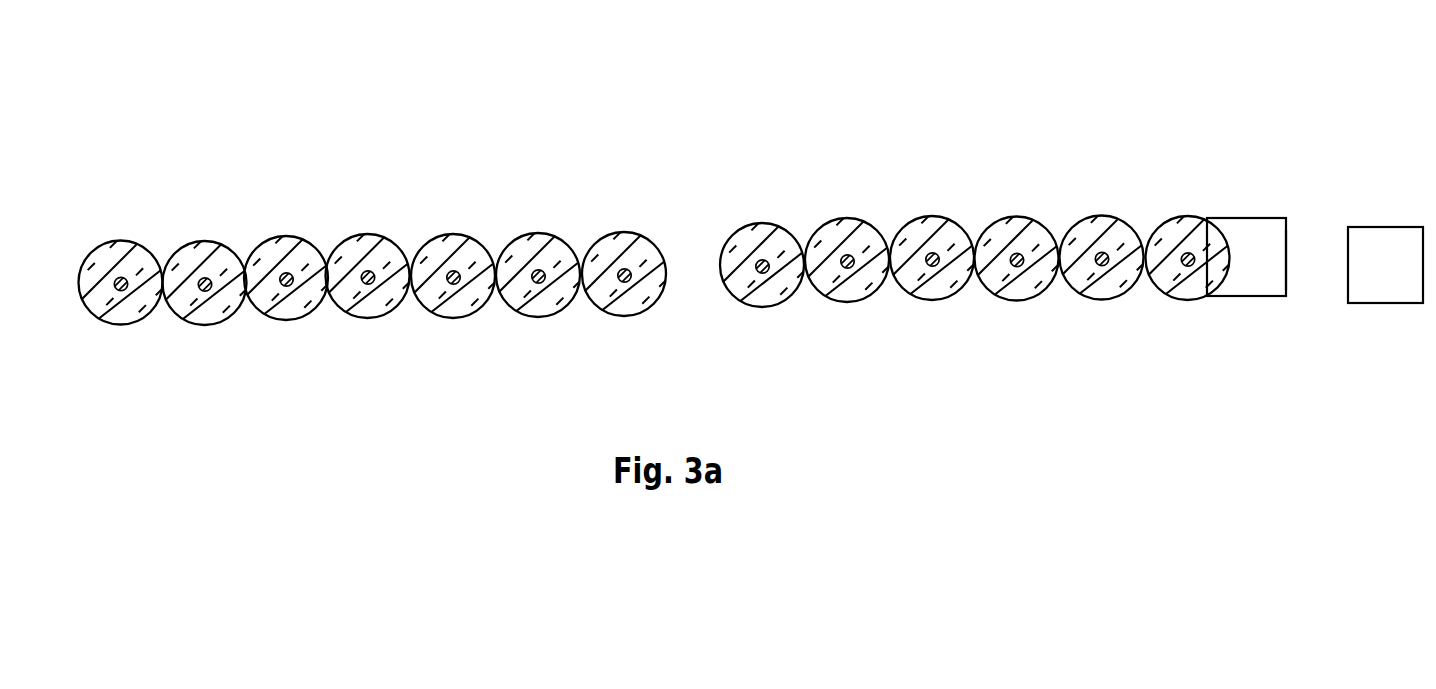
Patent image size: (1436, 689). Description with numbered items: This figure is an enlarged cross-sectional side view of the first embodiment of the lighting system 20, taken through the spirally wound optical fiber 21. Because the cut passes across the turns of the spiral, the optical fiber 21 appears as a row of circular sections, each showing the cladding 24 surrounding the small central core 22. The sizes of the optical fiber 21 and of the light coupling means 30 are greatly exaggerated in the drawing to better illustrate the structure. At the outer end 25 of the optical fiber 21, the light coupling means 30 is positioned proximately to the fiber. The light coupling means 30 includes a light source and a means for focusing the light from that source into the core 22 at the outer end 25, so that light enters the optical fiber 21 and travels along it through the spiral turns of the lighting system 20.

The lighting system 20 is at (842, 109).
The optical fiber 21 is at (1252, 235).
The core 22 is at (375, 277).
The cladding 24 is at (278, 253).
The outer end 25 is at (1287, 267).
The light coupling means 30 is at (1390, 280).